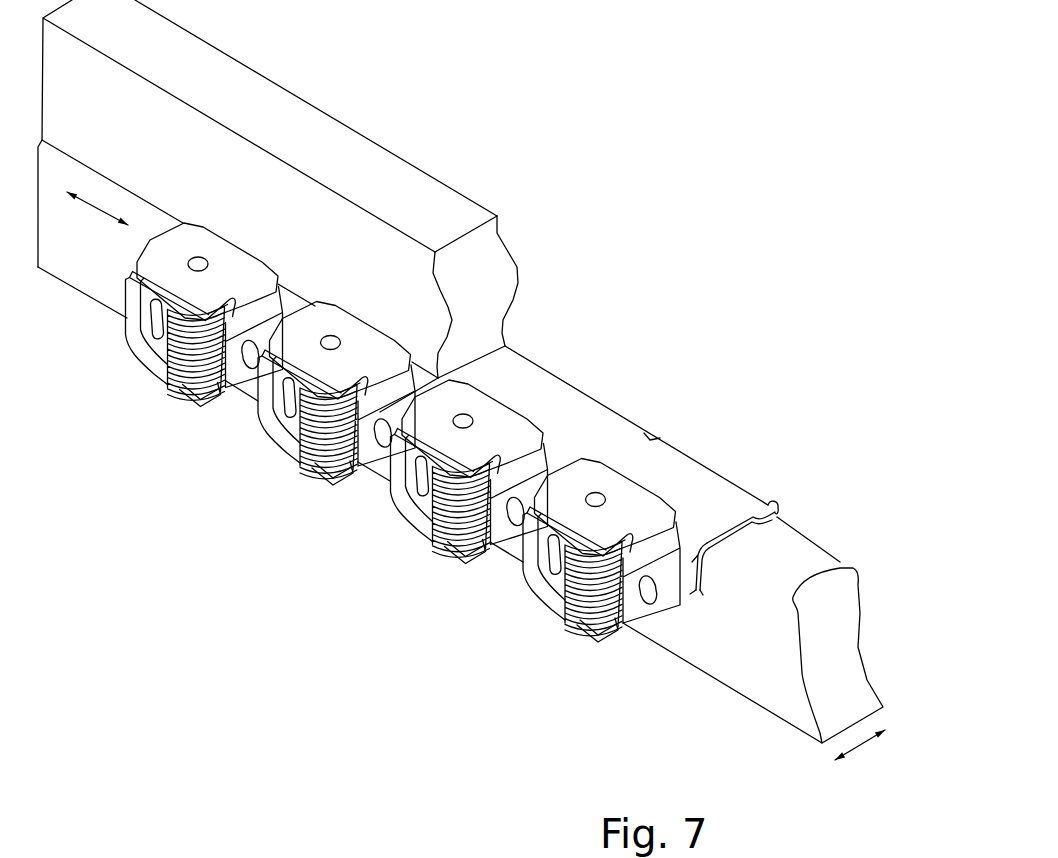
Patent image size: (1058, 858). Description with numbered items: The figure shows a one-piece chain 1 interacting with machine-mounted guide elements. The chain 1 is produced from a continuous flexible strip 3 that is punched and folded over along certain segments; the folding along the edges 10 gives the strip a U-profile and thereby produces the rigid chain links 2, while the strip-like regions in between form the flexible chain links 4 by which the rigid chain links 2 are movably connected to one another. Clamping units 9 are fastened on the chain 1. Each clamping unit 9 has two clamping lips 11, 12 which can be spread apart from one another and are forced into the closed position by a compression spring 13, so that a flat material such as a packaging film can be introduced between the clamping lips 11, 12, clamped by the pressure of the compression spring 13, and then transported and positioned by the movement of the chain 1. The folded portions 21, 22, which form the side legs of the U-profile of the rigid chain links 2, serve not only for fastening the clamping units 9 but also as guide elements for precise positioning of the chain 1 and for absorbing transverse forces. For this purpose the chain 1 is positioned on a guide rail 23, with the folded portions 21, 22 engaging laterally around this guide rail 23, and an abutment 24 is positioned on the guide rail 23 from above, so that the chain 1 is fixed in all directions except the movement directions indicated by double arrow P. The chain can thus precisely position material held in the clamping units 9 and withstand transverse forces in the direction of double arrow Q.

The chain 1 is at (592, 282).
The rigid chain link 2 is at (700, 564).
The flexible strip 3 is at (553, 388).
The flexible chain link 4 is at (623, 437).
The clamping unit 9 is at (550, 500).
The edge 10 is at (776, 513).
The clamping lip 11 is at (588, 545).
The clamping lip 12 is at (543, 563).
The compression spring 13 is at (580, 607).
The folded portion 21 is at (783, 516).
The folded portion 22 is at (687, 580).
The guide rail 23 is at (772, 665).
The abutment 24 is at (387, 179).